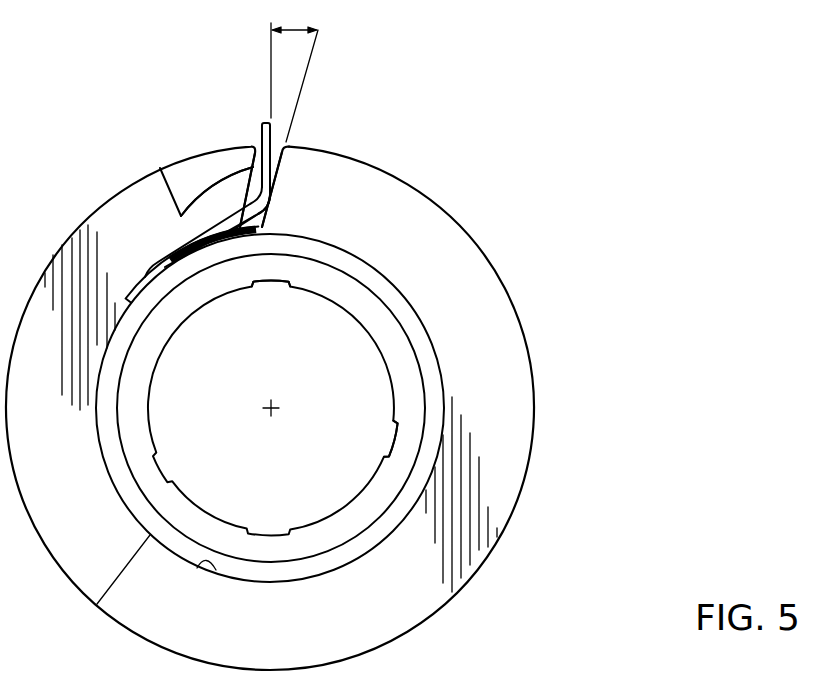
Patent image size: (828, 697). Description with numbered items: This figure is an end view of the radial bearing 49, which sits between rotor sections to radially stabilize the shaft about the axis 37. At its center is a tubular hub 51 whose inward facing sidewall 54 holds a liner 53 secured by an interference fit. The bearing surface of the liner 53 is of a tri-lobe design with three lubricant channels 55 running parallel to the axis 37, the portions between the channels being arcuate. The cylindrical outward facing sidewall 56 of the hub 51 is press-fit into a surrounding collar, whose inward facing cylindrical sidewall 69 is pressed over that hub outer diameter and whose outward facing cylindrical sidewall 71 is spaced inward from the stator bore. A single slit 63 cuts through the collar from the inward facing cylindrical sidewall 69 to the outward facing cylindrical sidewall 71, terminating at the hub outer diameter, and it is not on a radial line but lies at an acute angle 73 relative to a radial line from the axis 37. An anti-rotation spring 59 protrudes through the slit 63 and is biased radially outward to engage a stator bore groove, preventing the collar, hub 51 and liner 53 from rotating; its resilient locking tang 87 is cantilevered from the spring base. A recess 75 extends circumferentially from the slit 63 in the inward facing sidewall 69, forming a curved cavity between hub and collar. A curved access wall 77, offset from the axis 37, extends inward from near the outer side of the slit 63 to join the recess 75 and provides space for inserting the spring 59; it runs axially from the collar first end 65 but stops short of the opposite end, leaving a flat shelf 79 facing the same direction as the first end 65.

The axis 37 is at (268, 412).
The radial bearing 49 is at (572, 398).
The tubular hub 51 is at (432, 370).
The liner 53 is at (383, 420).
The inward facing sidewall 54 is at (148, 406).
The lubricant channels 55 is at (273, 282).
The outward facing sidewall 56 is at (97, 604).
The anti-rotation spring 59 is at (271, 163).
The slit 63 is at (264, 211).
The first end 65 is at (422, 608).
The inward facing cylindrical sidewall 69 is at (200, 567).
The outward facing cylindrical sidewall 71 is at (518, 494).
The acute angle 73 is at (298, 30).
The recess 75 is at (210, 250).
The access wall 77 is at (200, 190).
The shelf 79 is at (233, 183).
The locking tang 87 is at (181, 216).